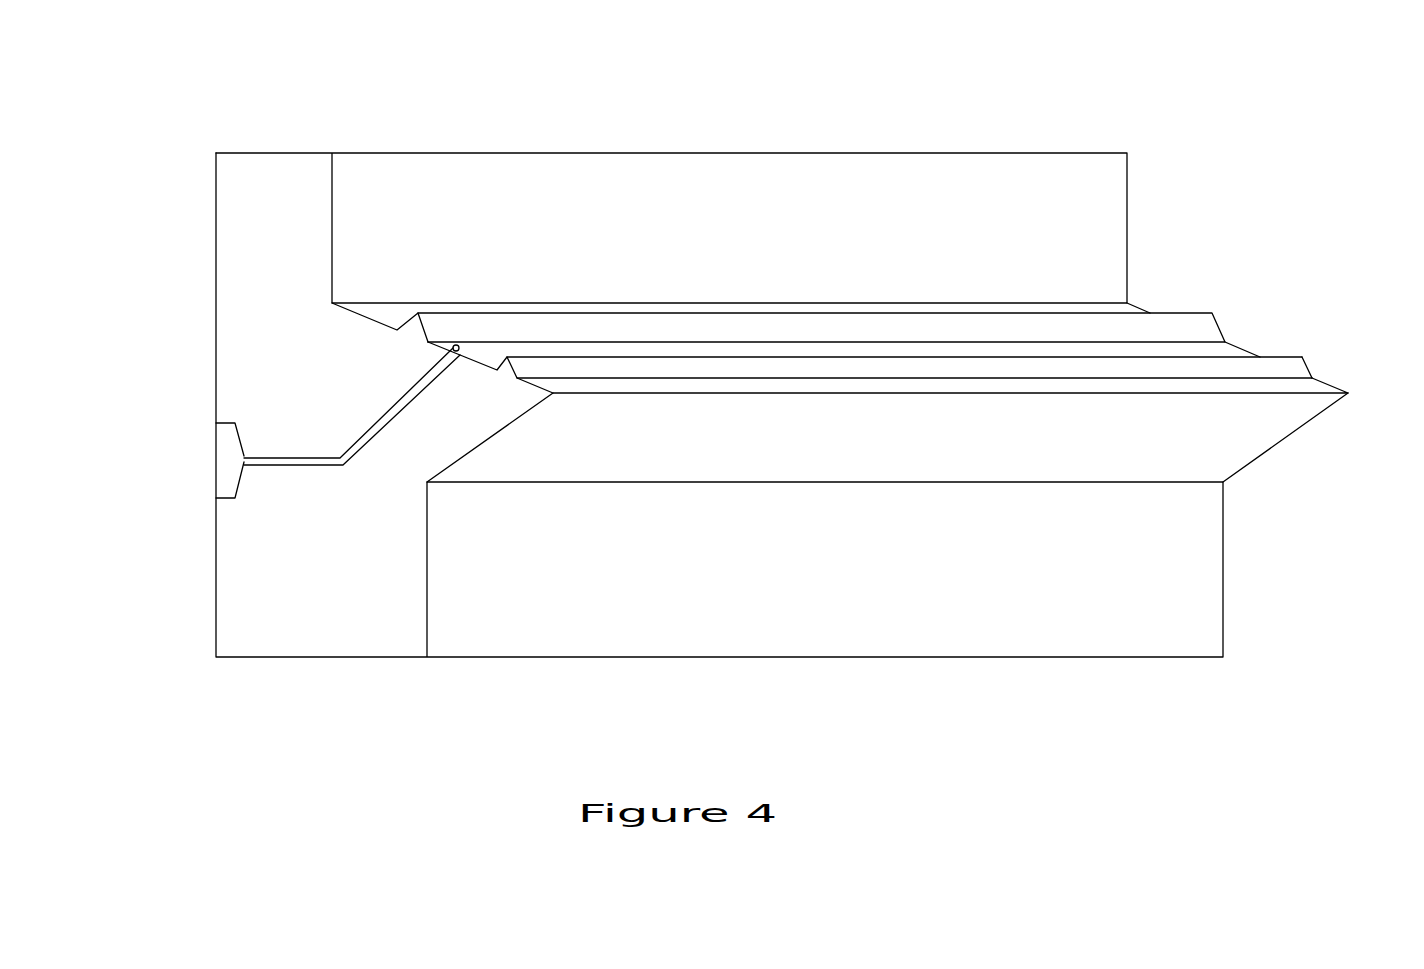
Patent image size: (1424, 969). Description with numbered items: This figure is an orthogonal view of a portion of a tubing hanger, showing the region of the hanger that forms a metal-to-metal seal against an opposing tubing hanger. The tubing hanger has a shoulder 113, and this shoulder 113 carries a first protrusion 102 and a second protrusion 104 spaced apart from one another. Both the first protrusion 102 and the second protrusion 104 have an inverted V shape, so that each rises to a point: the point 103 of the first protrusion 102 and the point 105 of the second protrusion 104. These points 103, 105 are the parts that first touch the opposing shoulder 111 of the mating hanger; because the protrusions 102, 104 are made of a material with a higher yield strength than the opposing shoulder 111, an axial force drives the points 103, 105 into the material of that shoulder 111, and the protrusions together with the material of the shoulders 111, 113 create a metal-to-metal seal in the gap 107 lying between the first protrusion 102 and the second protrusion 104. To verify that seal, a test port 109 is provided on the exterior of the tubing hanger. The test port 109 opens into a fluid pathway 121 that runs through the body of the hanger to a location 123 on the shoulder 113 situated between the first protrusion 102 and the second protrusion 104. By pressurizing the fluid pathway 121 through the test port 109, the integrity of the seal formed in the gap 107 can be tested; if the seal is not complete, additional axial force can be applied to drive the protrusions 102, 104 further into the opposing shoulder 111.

The first protrusion 102 is at (507, 375).
The point 103 is at (507, 357).
The second protrusion 104 is at (413, 330).
The point 105 is at (417, 313).
The gap 107 is at (1112, 352).
The test port 109 is at (244, 458).
The shoulder 111 is at (1235, 170).
The shoulder 113 is at (1128, 437).
The fluid pathway 121 is at (367, 433).
The location 123 is at (459, 345).